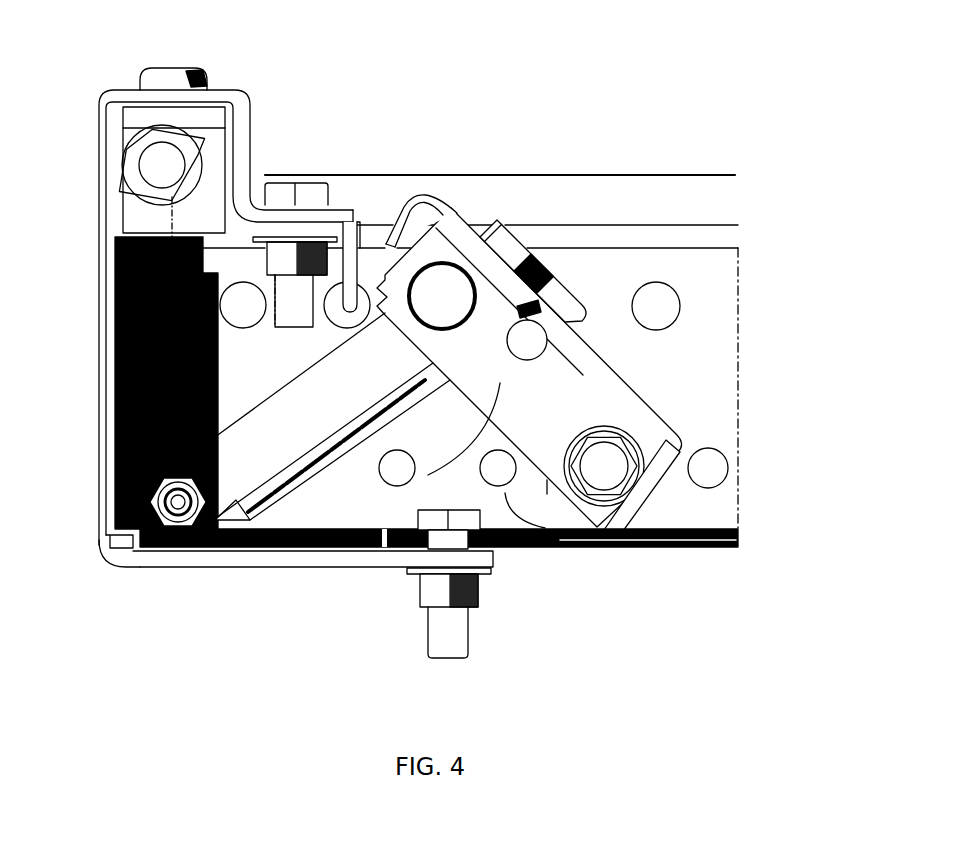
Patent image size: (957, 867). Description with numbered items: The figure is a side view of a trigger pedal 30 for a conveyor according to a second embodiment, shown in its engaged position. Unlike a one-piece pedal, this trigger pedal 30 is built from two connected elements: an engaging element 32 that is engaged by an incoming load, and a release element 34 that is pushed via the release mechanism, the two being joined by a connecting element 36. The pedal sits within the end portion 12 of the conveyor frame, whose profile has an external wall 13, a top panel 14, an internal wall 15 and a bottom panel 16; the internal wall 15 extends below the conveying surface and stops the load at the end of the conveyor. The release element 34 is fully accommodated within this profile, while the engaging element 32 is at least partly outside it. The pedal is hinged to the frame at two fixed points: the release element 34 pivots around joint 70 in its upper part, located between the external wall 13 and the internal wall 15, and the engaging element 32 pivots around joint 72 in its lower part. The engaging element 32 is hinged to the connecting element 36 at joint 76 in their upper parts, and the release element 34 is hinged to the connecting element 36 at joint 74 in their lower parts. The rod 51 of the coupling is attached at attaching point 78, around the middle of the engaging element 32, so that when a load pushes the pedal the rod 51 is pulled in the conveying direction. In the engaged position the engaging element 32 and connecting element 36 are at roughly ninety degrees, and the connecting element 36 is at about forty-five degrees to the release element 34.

The end portion 12 is at (548, 176).
The external wall 13 is at (93, 327).
The top panel 14 is at (218, 93).
The internal wall 15 is at (251, 143).
The bottom panel 16 is at (365, 566).
The trigger pedal 30 is at (300, 627).
The engaging element 32 is at (330, 408).
The release element 34 is at (145, 550).
The connecting element 36 is at (240, 547).
The rod 51 is at (740, 541).
The joint 70 is at (158, 175).
The joint 72 is at (682, 548).
The joint 74 is at (115, 465).
The joint 76 is at (440, 262).
The attaching point 78 is at (523, 344).